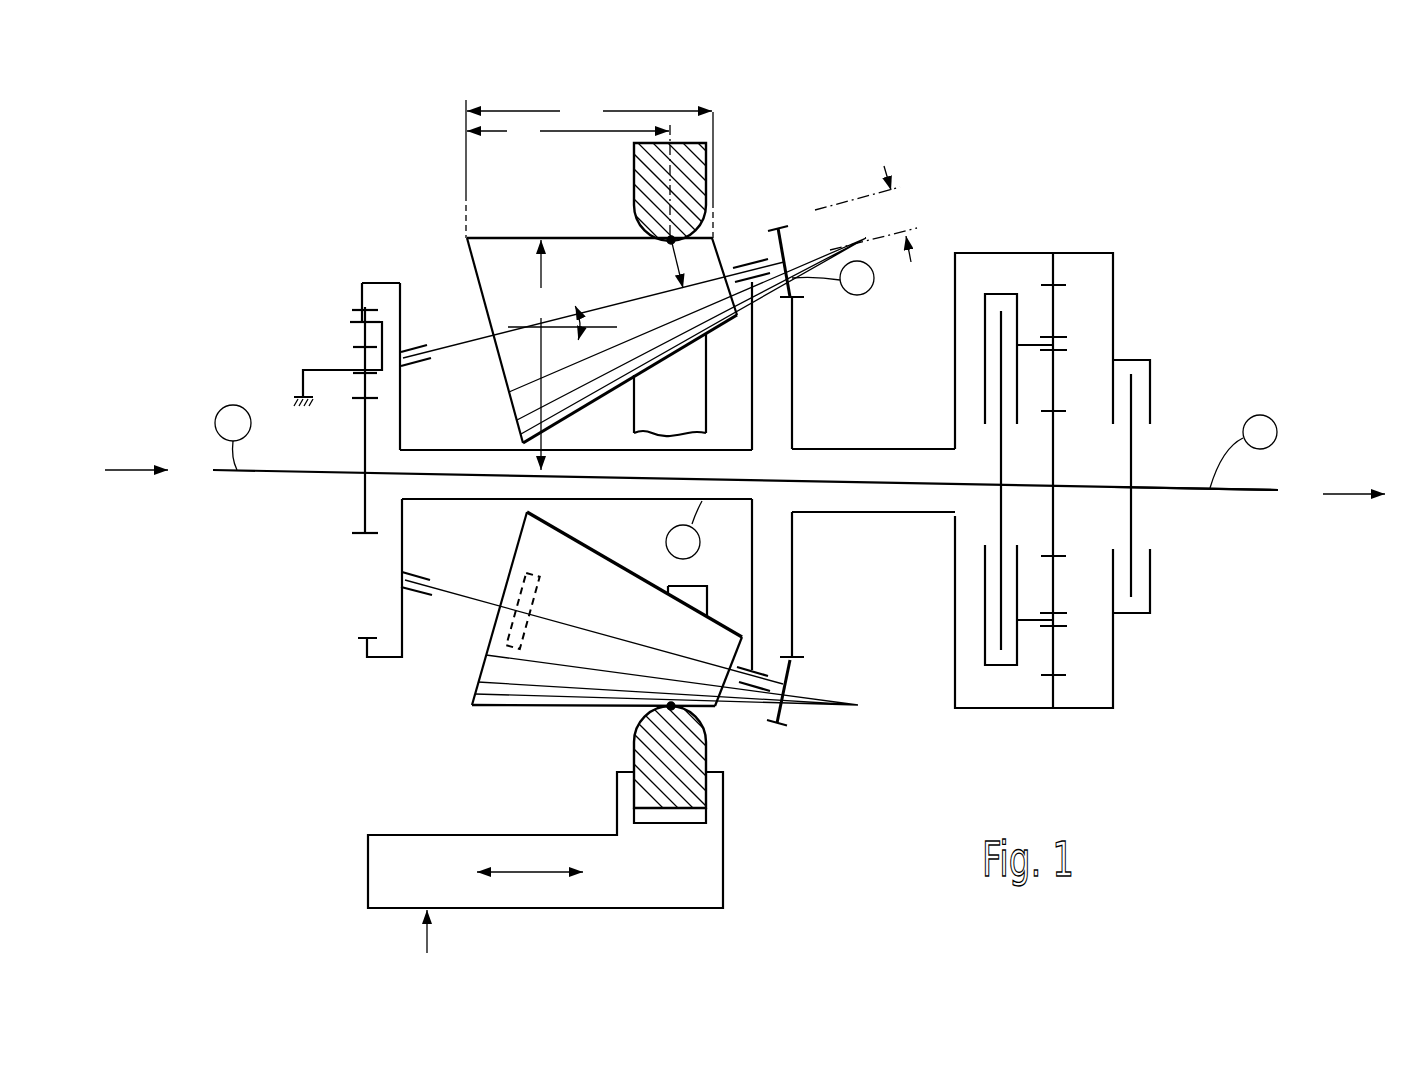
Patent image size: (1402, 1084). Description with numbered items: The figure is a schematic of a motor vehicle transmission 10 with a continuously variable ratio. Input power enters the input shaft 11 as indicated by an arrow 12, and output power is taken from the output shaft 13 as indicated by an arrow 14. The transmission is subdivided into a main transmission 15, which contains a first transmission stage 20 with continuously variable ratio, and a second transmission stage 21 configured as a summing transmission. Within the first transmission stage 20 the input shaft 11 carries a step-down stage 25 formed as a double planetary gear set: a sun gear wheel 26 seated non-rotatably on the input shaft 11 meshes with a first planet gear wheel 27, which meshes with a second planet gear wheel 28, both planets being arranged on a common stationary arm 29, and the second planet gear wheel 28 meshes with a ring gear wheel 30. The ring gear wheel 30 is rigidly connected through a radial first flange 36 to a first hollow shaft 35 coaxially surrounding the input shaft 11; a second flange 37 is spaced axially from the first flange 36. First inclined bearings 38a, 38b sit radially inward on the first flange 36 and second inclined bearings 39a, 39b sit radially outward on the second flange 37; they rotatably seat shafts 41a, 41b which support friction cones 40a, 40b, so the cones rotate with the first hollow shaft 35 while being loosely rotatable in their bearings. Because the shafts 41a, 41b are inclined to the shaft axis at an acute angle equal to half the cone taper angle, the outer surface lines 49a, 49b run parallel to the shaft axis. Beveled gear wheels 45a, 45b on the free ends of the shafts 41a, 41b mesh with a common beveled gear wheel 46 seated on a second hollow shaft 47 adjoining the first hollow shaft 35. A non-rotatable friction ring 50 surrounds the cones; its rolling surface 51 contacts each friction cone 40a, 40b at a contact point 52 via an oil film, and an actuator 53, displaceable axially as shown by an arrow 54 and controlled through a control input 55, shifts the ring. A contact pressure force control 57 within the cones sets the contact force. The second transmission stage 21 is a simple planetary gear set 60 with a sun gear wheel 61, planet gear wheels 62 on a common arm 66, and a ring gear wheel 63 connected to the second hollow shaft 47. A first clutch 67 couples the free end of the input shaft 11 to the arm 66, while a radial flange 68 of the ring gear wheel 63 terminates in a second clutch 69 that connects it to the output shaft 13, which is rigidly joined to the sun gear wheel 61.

The motor vehicle transmission 10 is at (745, 520).
The input shaft 11 is at (260, 477).
The arrow 12 is at (130, 477).
The output shaft 13 is at (1237, 493).
The arrow 14 is at (1348, 497).
The main transmission 15 is at (286, 322).
The first transmission stage 20 is at (746, 520).
The second transmission stage 21 is at (1054, 429).
The step-down stage 25 is at (328, 329).
The sun gear wheel 26 is at (357, 445).
The first planet gear wheel 27 is at (357, 394).
The second planet gear wheel 28 is at (353, 310).
The stationary arm 29 is at (315, 370).
The ring gear wheel 30 is at (384, 282).
The first hollow shaft 35 is at (477, 450).
The first flange 36 is at (400, 313).
The second flange 37 is at (750, 345).
The first inclined bearing 38a is at (417, 374).
The first inclined bearing 38b is at (422, 575).
The second inclined bearing 39a is at (750, 258).
The second inclined bearing 39b is at (745, 697).
The friction cone 40a is at (520, 275).
The friction cone 40b is at (505, 690).
The shaft 41a is at (478, 345).
The shaft 41b is at (458, 600).
The beveled gear wheel 45a is at (784, 240).
The beveled gear wheel 45b is at (783, 717).
The common beveled gear wheel 46 is at (792, 378).
The second hollow shaft 47 is at (880, 448).
The outer surface line 49a is at (555, 238).
The outer surface line 49b is at (558, 710).
The friction ring 50 is at (682, 272).
The rolling surface 51 is at (633, 225).
The contact point 52 is at (671, 244).
The actuator 53 is at (700, 870).
The arrow 54 is at (525, 872).
The control input 55 is at (433, 944).
The contact pressure force control 57 is at (540, 587).
The planetary gear set 60 is at (1054, 455).
The sun gear wheel 61 is at (1057, 448).
The planet gear wheels 62 is at (1057, 372).
The ring gear wheel 63 is at (1052, 265).
The arm 66 is at (1031, 341).
The first clutch 67 is at (990, 350).
The radial flange 68 is at (1113, 320).
The second clutch 69 is at (1138, 393).